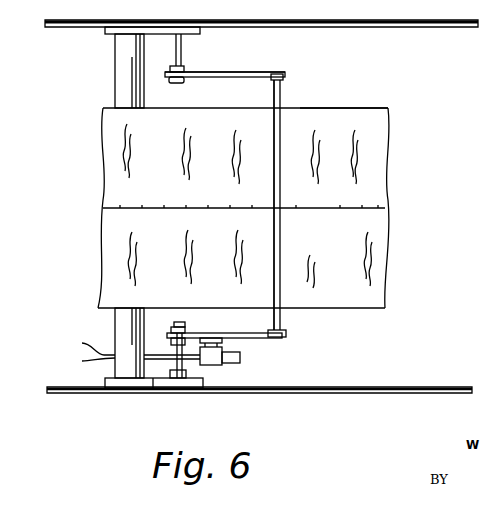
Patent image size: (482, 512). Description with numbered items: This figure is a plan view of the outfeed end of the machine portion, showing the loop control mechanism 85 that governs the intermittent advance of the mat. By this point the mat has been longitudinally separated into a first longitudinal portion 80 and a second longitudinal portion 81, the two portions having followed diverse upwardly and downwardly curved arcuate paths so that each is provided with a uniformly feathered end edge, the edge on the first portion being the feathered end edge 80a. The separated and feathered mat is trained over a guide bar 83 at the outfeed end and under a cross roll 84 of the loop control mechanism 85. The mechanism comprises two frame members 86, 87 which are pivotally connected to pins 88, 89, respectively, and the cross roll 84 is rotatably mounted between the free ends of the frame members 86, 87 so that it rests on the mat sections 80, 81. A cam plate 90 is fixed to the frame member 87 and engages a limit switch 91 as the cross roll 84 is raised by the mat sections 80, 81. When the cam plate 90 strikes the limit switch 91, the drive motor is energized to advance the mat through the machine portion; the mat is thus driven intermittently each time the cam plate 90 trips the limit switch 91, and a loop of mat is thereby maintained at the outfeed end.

The first longitudinal portion of the mat 80 is at (246, 225).
The feathered end edge 80a is at (357, 210).
The second longitudinal portion of the mat 81 is at (331, 118).
The guide bar 83 is at (122, 74).
The cross roll 84 is at (273, 170).
The loop control mechanism 85 is at (226, 73).
The frame member 86 is at (200, 72).
The frame member 87 is at (261, 339).
The pin 88 is at (175, 62).
The pin 89 is at (168, 360).
The cam plate 90 is at (213, 337).
The limit switch 91 is at (215, 373).